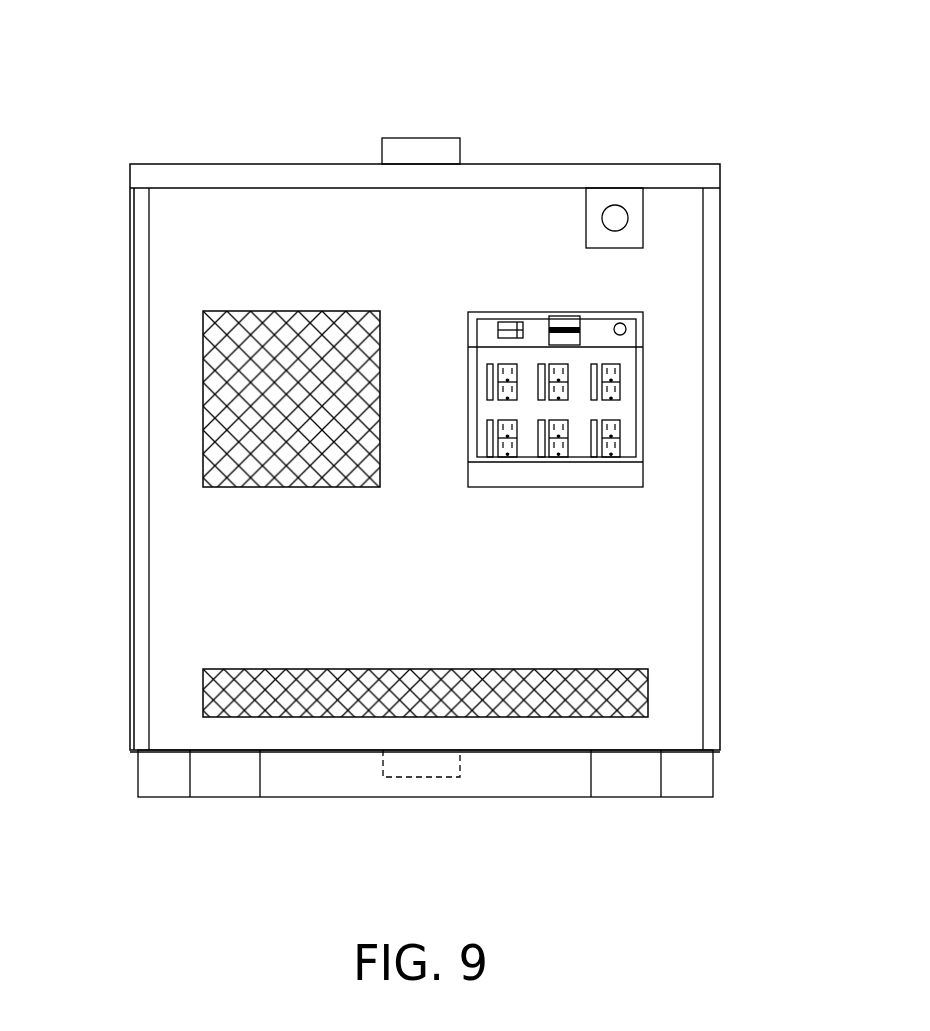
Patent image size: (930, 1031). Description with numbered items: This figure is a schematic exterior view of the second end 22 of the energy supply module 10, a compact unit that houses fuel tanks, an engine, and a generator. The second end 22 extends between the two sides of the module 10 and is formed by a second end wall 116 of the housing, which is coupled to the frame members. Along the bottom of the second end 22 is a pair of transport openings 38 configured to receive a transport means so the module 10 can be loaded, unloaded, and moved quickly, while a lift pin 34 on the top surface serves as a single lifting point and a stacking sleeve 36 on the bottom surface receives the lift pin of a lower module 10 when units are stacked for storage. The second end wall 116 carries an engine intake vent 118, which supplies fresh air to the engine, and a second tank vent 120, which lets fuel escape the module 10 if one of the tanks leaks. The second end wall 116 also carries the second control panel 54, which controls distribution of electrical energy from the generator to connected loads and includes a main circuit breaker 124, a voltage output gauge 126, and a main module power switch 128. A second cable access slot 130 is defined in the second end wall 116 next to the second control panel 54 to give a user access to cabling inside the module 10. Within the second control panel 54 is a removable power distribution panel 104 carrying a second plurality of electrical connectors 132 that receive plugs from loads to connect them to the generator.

The energy supply module 10 is at (143, 93).
The second end 22 is at (202, 620).
The lift pin 34 is at (433, 150).
The stacking sleeve 36 is at (415, 762).
The transport openings 38 is at (625, 783).
The second control panel 54 is at (643, 335).
The removable power distribution panel 104 is at (653, 418).
The second end wall 116 is at (203, 553).
The engine intake vent 118 is at (220, 405).
The second tank vent 120 is at (630, 693).
The main circuit breaker 124 is at (514, 322).
The voltage output gauge 126 is at (568, 321).
The main module power switch 128 is at (627, 330).
The second cable access slot 130 is at (558, 487).
The second plurality of electrical connectors 132 is at (614, 387).